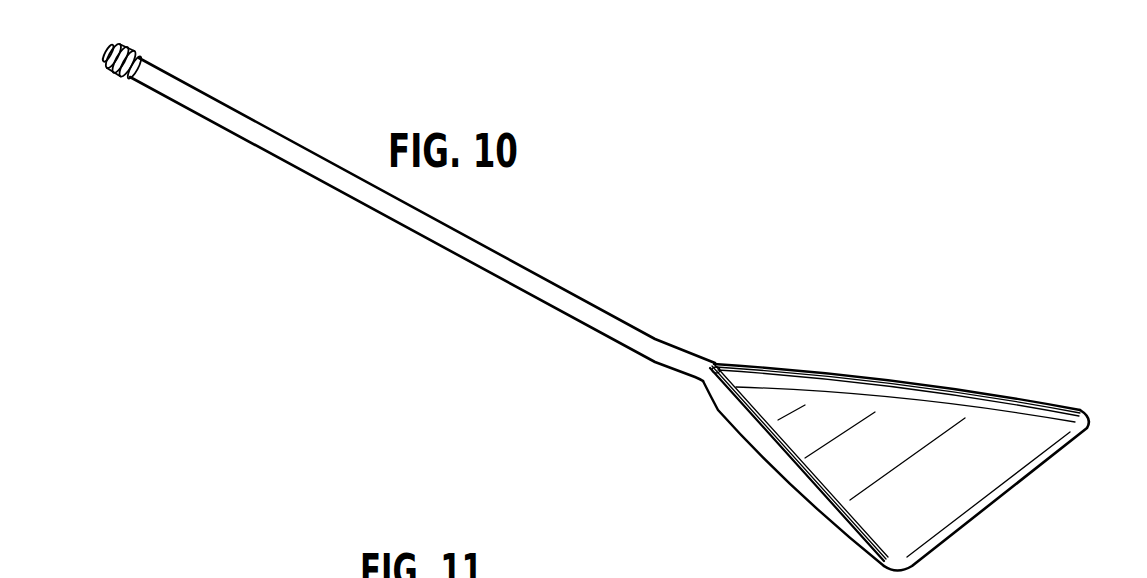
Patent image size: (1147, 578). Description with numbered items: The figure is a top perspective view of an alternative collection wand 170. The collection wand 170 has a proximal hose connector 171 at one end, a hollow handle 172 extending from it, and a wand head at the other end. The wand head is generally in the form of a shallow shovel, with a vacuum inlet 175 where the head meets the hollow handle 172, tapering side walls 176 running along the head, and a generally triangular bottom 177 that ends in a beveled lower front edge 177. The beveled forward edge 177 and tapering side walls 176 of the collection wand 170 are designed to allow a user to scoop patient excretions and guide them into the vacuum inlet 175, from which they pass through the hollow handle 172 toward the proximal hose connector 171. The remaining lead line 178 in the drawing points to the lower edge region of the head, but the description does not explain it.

The scraper tool 170 is at (132, 258).
The end cap 171 is at (112, 84).
The shaft 172 is at (278, 150).
The shaft-head joint 175 is at (732, 373).
The top edge rim 176 is at (818, 382).
The blade surface 177 is at (1027, 445).
The bottom edge 178 is at (980, 508).